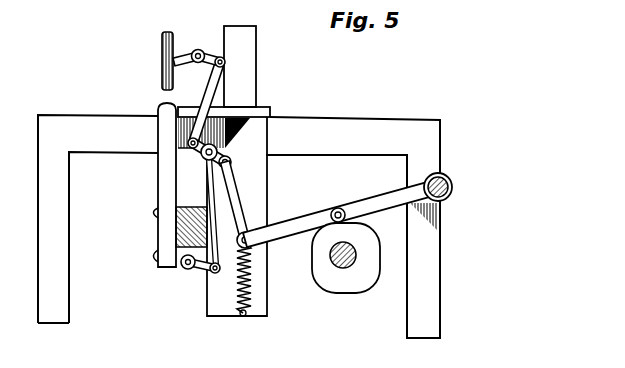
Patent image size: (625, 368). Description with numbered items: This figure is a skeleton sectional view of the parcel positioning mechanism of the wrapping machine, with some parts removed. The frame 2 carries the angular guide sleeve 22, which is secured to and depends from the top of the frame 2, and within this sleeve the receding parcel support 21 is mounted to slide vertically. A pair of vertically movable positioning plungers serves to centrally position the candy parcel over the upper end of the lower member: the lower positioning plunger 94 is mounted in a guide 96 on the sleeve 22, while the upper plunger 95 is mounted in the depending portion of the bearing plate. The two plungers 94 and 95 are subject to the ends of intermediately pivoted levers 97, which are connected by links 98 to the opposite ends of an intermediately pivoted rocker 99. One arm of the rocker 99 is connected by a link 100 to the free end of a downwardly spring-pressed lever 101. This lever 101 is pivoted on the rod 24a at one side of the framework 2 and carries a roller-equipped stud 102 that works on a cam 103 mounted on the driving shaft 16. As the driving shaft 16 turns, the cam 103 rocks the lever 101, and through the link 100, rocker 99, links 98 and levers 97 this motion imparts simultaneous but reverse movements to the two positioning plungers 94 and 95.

The frame 2 is at (239, 226).
The driving shaft 16 is at (360, 255).
The receding parcel support 21 is at (246, 44).
The angular guide sleeve 22 is at (251, 183).
The pivot rod 24a is at (452, 187).
The lower positioning plunger 94 is at (158, 186).
The upper positioning plunger 95 is at (162, 50).
The guide 96 is at (175, 229).
The intermediately pivoted levers 97 is at (183, 56).
The links 98 is at (210, 100).
The intermediately pivoted rocker 99 is at (216, 158).
The link 100 is at (239, 213).
The downwardly spring-pressed lever 101 is at (403, 193).
The roller-equipped stud 102 is at (331, 221).
The cam 103 is at (355, 287).